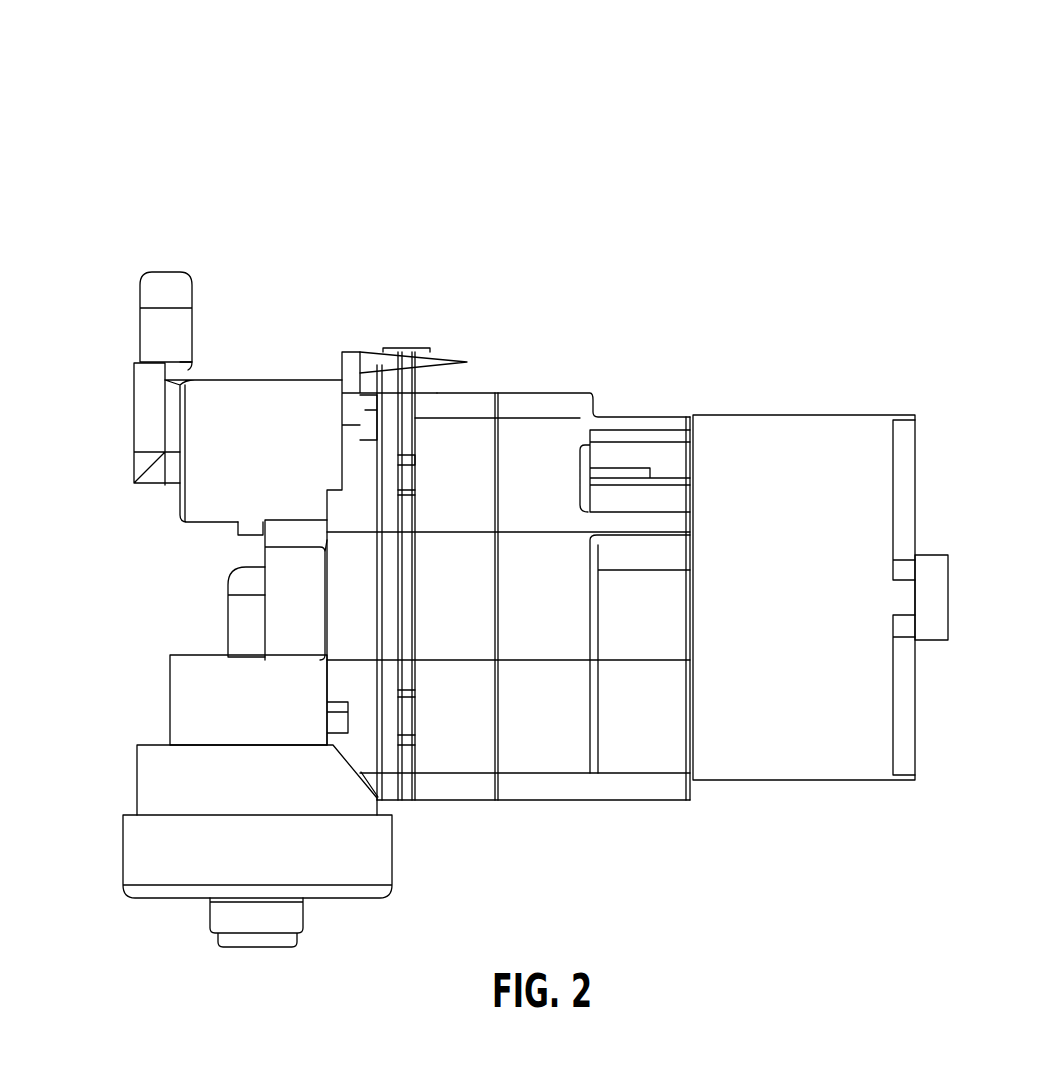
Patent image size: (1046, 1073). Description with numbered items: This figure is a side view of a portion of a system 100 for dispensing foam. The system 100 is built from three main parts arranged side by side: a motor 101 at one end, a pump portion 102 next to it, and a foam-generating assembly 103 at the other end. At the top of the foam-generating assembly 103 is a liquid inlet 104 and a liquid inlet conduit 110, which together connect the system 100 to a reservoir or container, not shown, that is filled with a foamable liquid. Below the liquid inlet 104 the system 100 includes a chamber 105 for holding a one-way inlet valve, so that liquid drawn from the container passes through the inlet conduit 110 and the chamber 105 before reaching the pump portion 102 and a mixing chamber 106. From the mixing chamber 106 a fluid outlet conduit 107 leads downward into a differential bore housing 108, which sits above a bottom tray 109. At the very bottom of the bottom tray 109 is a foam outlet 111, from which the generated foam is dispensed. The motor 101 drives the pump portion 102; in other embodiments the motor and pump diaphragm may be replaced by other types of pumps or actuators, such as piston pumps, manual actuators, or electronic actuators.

The system for dispensing foam 100 is at (450, 96).
The motor 101 is at (693, 392).
The pump portion 102 is at (380, 338).
The foam-generating assembly 103 is at (215, 563).
The liquid inlet 104 is at (165, 284).
The chamber 105 is at (233, 470).
The mixing chamber 106 is at (288, 597).
The fluid outlet conduit 107 is at (240, 640).
The differential bore housing 108 is at (232, 707).
The bottom tray 109 is at (178, 857).
The liquid inlet conduit 110 is at (155, 386).
The foam outlet 111 is at (222, 918).